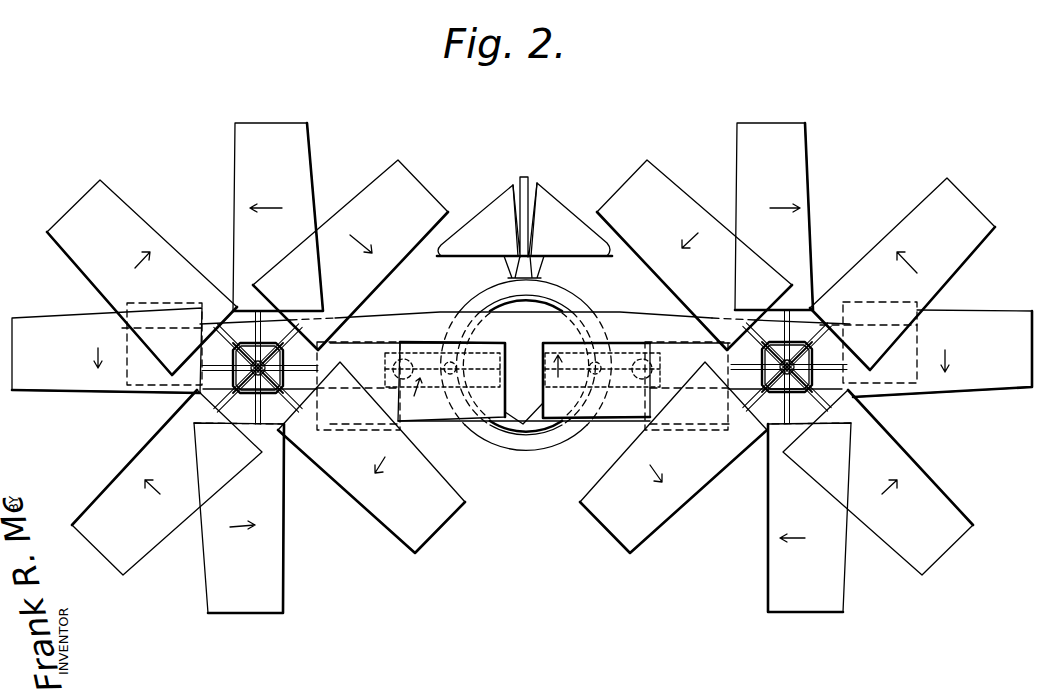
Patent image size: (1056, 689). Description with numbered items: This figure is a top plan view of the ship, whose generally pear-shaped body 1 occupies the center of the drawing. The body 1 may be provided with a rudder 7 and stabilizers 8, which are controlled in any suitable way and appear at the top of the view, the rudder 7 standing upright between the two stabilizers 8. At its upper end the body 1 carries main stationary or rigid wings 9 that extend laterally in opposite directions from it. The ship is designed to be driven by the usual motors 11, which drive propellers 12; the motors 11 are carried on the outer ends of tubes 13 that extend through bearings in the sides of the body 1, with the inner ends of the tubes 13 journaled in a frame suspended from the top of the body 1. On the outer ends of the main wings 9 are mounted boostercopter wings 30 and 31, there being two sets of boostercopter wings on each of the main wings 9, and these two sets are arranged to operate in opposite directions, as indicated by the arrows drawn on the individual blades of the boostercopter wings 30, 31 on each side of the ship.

The body of the ship 1 is at (572, 299).
The rudder 7 is at (528, 183).
The stabilizers 8 is at (496, 208).
The main stationary or rigid wings 9 is at (433, 312).
The motors 11 is at (507, 382).
The propellers 12 is at (532, 352).
The tubes 13 is at (424, 398).
The boostercopter wings 30 is at (162, 246).
The boostercopter wings 31 is at (313, 170).